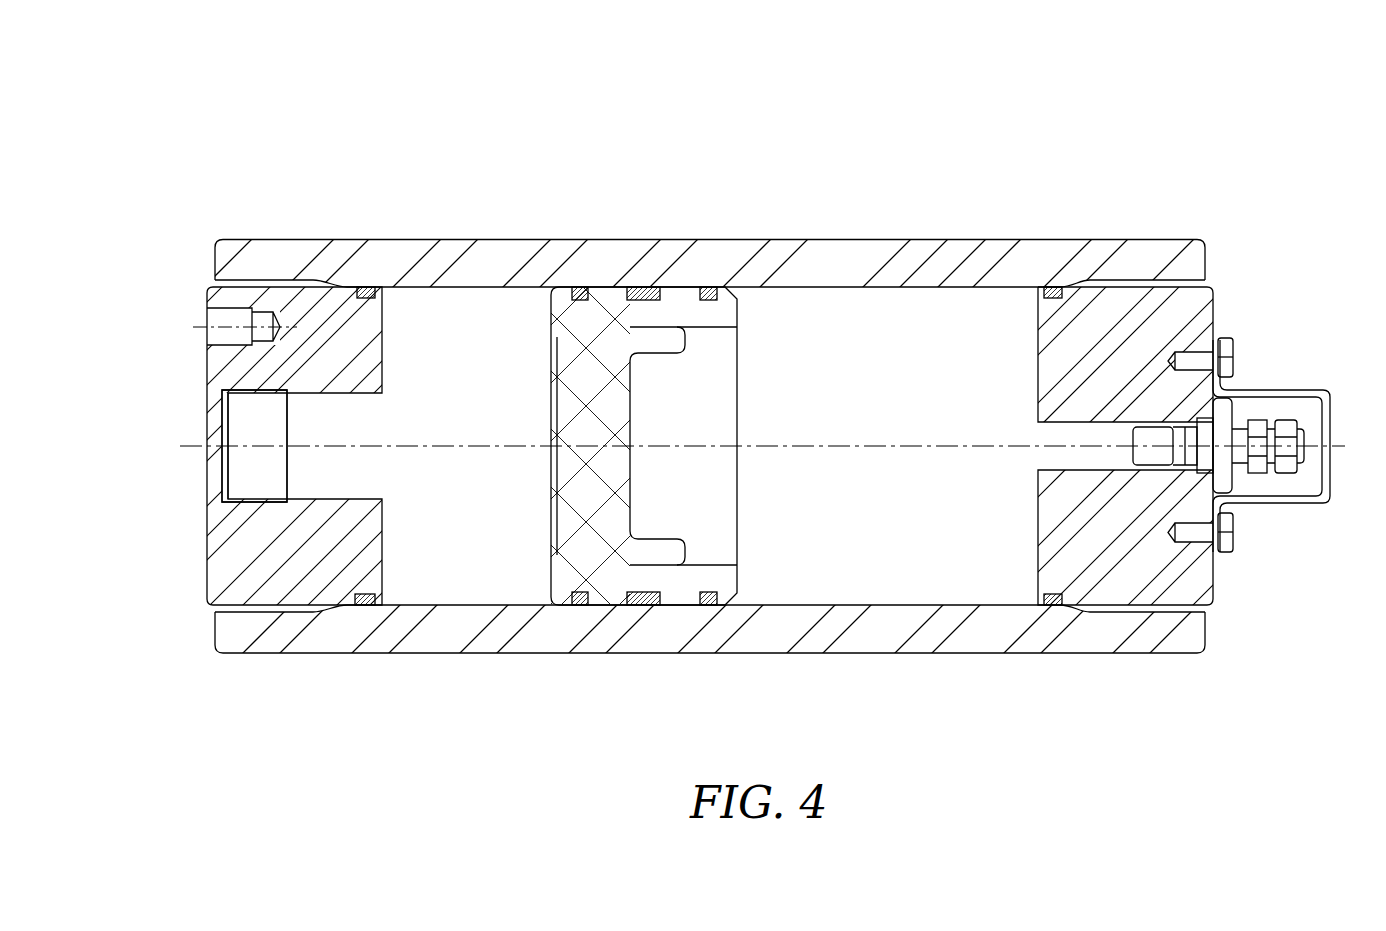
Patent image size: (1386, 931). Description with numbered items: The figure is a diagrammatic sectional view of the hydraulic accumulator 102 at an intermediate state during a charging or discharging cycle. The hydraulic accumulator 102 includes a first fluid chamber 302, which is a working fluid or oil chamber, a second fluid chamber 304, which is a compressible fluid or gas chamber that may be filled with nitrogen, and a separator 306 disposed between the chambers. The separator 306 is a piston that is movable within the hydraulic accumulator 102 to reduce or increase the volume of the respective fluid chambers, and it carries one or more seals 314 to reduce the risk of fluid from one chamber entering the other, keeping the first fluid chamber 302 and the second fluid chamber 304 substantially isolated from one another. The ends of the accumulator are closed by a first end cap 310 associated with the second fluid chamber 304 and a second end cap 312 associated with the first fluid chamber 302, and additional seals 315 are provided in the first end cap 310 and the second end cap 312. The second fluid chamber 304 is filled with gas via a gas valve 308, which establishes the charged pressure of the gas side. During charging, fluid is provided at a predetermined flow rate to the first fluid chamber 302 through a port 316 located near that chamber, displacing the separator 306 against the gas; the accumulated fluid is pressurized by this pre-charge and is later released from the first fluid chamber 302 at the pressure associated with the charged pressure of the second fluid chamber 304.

The hydraulic accumulator 102 is at (162, 117).
The first fluid chamber 302 is at (484, 322).
The second fluid chamber 304 is at (870, 322).
The separator 306 is at (733, 300).
The gas valve 308 is at (1304, 428).
The first end cap 310 is at (1173, 590).
The second end cap 312 is at (295, 552).
The seals 314 is at (705, 287).
The additional seals 315 is at (372, 287).
The port 316 is at (207, 470).